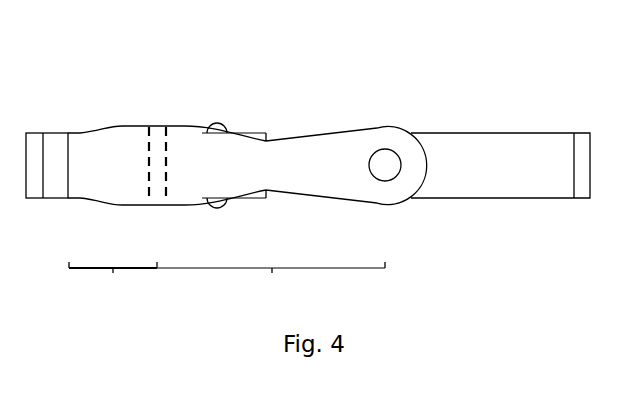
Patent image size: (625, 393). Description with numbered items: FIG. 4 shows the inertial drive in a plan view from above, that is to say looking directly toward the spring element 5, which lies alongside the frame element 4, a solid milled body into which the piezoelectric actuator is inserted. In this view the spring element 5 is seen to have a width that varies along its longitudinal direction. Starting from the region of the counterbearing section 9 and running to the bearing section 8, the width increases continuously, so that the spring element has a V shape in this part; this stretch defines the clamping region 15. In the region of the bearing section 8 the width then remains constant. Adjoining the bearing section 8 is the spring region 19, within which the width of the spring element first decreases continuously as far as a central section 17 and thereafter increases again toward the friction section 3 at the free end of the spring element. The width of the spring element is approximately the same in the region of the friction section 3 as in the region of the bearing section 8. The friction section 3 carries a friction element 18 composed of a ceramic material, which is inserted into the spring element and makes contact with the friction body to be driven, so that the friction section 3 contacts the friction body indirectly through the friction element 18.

The friction section 3 is at (397, 137).
The frame element 4 is at (493, 160).
The spring element 5 is at (208, 148).
The bearing section 8 is at (161, 127).
The counterbearing section 9 is at (53, 134).
The clamping region 15 is at (113, 277).
The central section 17 is at (271, 148).
The friction element 18 is at (385, 172).
The spring region 19 is at (271, 277).